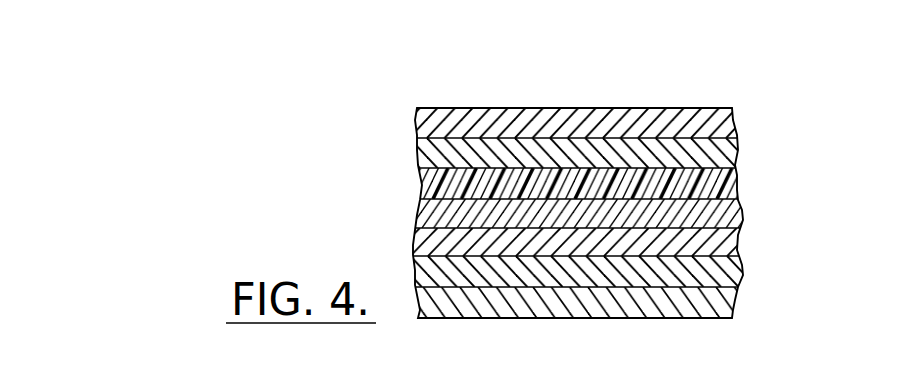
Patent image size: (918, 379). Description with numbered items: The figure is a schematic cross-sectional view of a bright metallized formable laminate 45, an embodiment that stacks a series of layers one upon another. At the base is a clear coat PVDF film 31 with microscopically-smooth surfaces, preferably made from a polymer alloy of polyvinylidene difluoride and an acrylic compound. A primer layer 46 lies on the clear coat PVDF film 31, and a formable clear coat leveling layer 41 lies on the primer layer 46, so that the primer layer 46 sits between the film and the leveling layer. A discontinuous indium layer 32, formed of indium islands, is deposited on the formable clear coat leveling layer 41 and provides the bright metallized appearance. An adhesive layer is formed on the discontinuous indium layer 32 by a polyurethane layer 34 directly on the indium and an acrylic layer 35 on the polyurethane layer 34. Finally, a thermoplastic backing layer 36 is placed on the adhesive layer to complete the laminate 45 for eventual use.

The bright metallized formable laminate 45 is at (662, 85).
The thermoplastic backing layer 36 is at (733, 115).
The acrylic layer 35 is at (735, 143).
The polyurethane layer 34 is at (734, 174).
The discontinuous indium layer 32 is at (742, 208).
The formable clear coat leveling layer 41 is at (738, 238).
The primer layer 46 is at (738, 267).
The clear coat PVDF film 31 is at (737, 297).